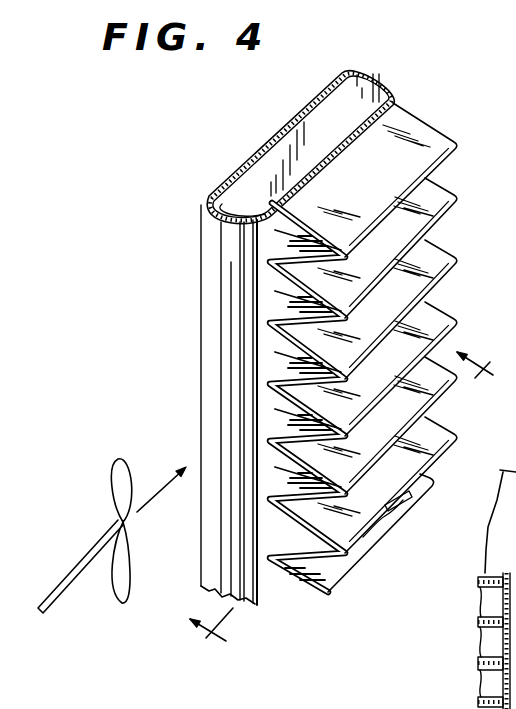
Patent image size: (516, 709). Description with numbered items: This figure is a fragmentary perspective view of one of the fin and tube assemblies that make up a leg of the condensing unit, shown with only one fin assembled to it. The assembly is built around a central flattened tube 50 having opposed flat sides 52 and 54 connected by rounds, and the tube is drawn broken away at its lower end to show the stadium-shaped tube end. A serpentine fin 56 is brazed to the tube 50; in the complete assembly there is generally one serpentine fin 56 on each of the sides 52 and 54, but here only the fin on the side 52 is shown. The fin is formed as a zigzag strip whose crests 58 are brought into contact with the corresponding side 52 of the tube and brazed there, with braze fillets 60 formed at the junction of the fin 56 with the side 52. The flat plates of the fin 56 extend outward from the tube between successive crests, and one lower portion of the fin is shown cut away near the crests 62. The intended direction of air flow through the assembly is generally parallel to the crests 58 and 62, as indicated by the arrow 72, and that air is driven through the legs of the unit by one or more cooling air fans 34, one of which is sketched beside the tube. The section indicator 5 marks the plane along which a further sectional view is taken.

The section line 5- 5 is at (460, 610).
The cooling air fan 34 is at (128, 600).
The central flattened tube 50 is at (264, 172).
The flat side 52 is at (292, 120).
The flat side 54 is at (270, 240).
The serpentine fin 56 is at (397, 155).
The crest 58 is at (280, 400).
The braze fillet 60 is at (288, 355).
The crest 62 is at (363, 540).
The arrow 72 is at (161, 499).